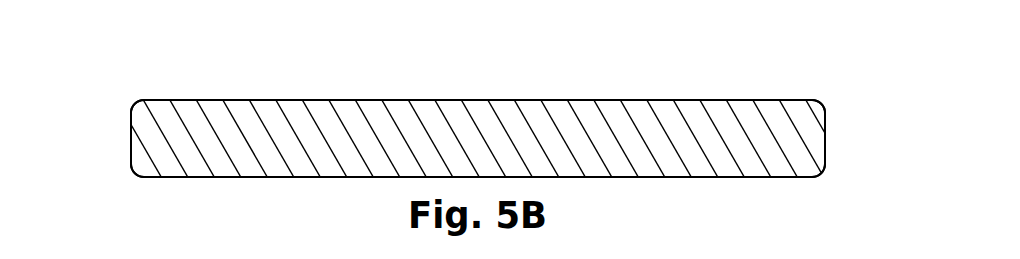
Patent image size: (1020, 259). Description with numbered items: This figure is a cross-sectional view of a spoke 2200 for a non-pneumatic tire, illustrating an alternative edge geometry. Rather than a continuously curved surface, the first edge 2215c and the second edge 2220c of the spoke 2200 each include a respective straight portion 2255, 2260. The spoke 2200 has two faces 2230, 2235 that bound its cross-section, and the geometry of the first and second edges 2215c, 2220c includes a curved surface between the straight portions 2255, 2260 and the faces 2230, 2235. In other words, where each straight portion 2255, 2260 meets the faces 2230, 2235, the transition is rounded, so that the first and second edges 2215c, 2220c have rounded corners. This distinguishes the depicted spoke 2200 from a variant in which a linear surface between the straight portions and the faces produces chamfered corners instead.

The spoke 2200 is at (816, 64).
The first edge 2215c is at (149, 139).
The face 2235 is at (533, 100).
The face 2230 is at (545, 177).
The straight portion 2255 is at (131, 143).
The second edge 2220c is at (898, 127).
The straight portion 2260 is at (823, 156).